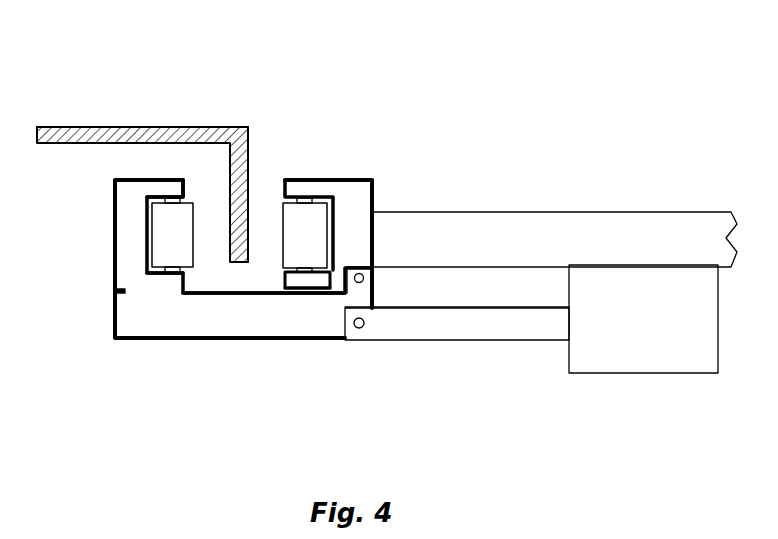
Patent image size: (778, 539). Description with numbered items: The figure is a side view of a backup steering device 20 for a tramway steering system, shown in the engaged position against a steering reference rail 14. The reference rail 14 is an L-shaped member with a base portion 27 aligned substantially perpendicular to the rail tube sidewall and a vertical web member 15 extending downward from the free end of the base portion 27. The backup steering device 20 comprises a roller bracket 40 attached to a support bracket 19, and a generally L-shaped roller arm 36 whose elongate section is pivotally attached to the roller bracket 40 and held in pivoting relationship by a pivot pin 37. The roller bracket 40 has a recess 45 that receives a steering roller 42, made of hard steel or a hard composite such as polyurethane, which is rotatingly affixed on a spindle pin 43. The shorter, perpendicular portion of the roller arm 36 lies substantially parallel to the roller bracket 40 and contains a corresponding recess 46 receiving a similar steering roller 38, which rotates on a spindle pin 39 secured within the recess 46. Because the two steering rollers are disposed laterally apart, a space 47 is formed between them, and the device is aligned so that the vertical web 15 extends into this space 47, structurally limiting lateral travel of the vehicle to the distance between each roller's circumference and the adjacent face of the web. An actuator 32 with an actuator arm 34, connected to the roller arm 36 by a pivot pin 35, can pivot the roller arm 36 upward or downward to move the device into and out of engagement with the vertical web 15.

The steering reference rail 14 is at (162, 114).
The vertical web member 15 is at (251, 150).
The support bracket 19 is at (531, 247).
The backup steering device 20 is at (455, 166).
The base portion 27 is at (107, 127).
The actuator 32 is at (661, 341).
The actuator arm 34 is at (447, 340).
The pivot pin 35 is at (359, 328).
The roller arm 36 is at (163, 340).
The pivot pin 37 is at (364, 278).
The steering roller 38 is at (197, 213).
The spindle pin 39 is at (183, 271).
The roller bracket 40 is at (340, 178).
The steering roller 42 is at (278, 208).
The spindle pin 43 is at (283, 270).
The recess 45 is at (318, 278).
The recess 46 is at (150, 272).
The space 47 is at (226, 246).